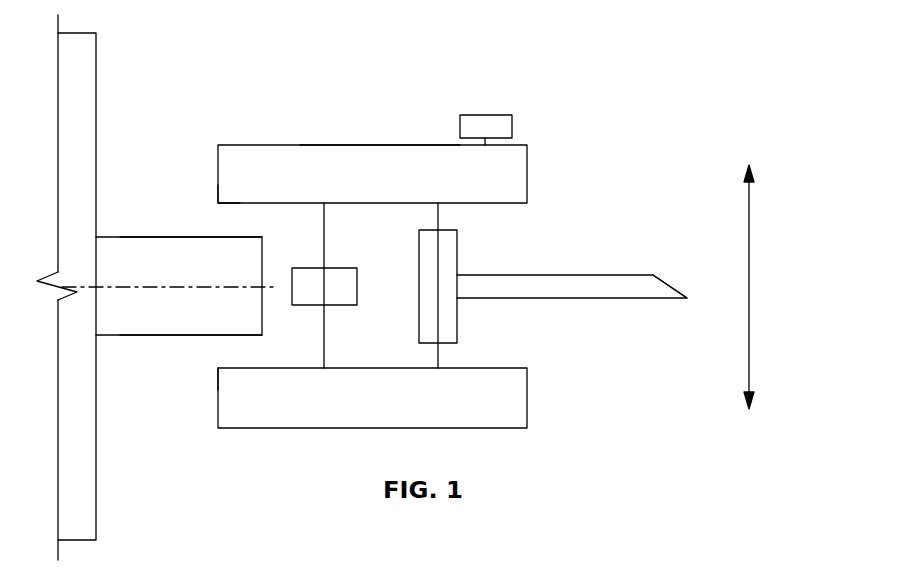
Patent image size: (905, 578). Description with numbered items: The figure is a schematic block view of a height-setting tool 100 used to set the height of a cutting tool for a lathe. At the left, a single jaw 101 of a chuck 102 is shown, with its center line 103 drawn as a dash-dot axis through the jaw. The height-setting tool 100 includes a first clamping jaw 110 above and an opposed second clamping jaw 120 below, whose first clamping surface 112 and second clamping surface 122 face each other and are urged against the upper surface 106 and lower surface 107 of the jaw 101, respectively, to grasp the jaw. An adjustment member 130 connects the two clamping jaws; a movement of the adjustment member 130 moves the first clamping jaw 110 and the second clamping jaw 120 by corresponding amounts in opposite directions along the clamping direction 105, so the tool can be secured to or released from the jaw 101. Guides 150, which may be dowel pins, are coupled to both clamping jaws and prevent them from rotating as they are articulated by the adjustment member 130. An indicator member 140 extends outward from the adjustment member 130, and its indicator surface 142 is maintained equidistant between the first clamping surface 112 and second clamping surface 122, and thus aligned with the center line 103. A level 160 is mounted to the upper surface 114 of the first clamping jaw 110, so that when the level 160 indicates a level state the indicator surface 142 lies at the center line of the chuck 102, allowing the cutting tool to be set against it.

The height-setting tool 100 is at (663, 70).
The jaw 101 is at (118, 253).
The chuck 102 is at (96, 100).
The center line 103 is at (196, 286).
The clamping direction 105 is at (750, 278).
The upper surface 106 is at (248, 238).
The lower surface 107 is at (243, 336).
The first clamping jaw 110 is at (527, 173).
The first clamping surface 112 is at (236, 205).
The upper surface 114 is at (378, 144).
The second clamping jaw 120 is at (527, 406).
The second clamping surface 122 is at (238, 368).
The adjustment member 130 is at (458, 312).
The indicator member 140 is at (601, 274).
The indicator surface 142 is at (628, 299).
The guides 150 is at (358, 289).
The level 160 is at (512, 121).